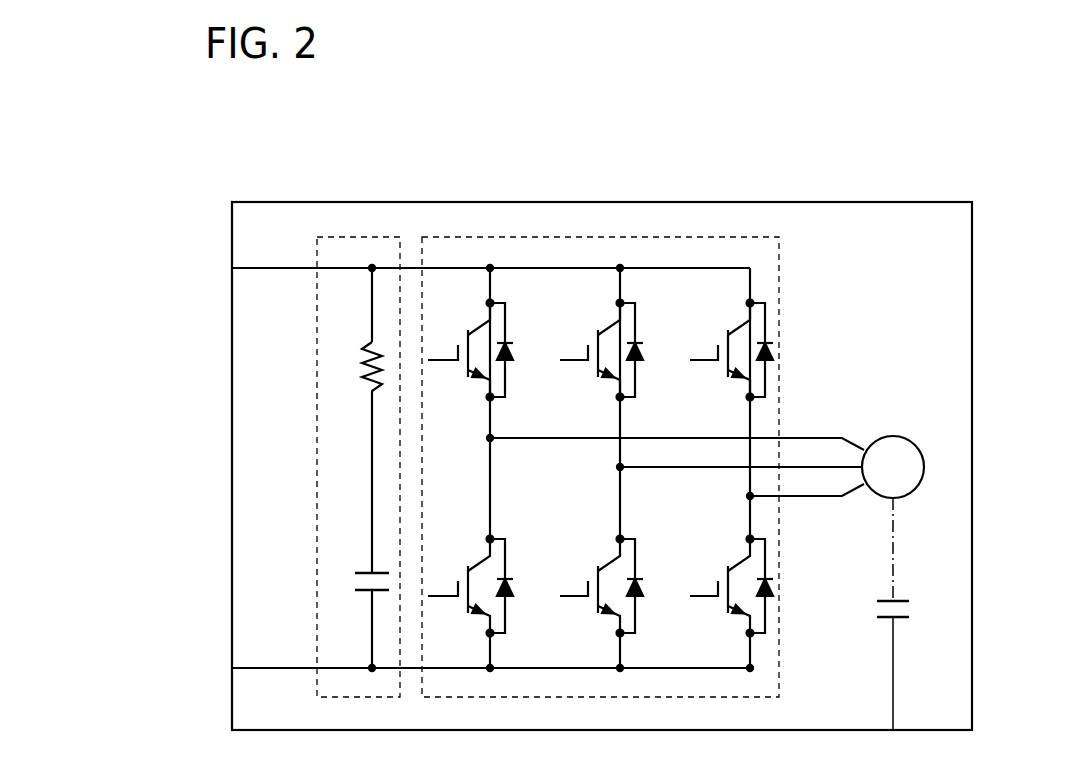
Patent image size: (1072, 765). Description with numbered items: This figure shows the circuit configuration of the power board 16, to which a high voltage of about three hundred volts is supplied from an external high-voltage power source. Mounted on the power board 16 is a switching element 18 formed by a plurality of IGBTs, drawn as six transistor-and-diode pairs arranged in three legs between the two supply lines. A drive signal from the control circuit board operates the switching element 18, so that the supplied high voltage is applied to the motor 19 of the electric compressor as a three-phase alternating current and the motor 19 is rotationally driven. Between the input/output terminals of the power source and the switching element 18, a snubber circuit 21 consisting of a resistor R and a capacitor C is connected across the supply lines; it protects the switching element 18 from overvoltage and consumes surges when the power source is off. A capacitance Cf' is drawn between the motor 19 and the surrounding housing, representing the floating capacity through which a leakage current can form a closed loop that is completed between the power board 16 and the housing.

The power board 16 is at (877, 202).
The switching element 18 is at (590, 237).
The motor 19 is at (924, 467).
The snubber circuit 21 is at (358, 237).
The stray capacitance to ground Cf' is at (969, 614).